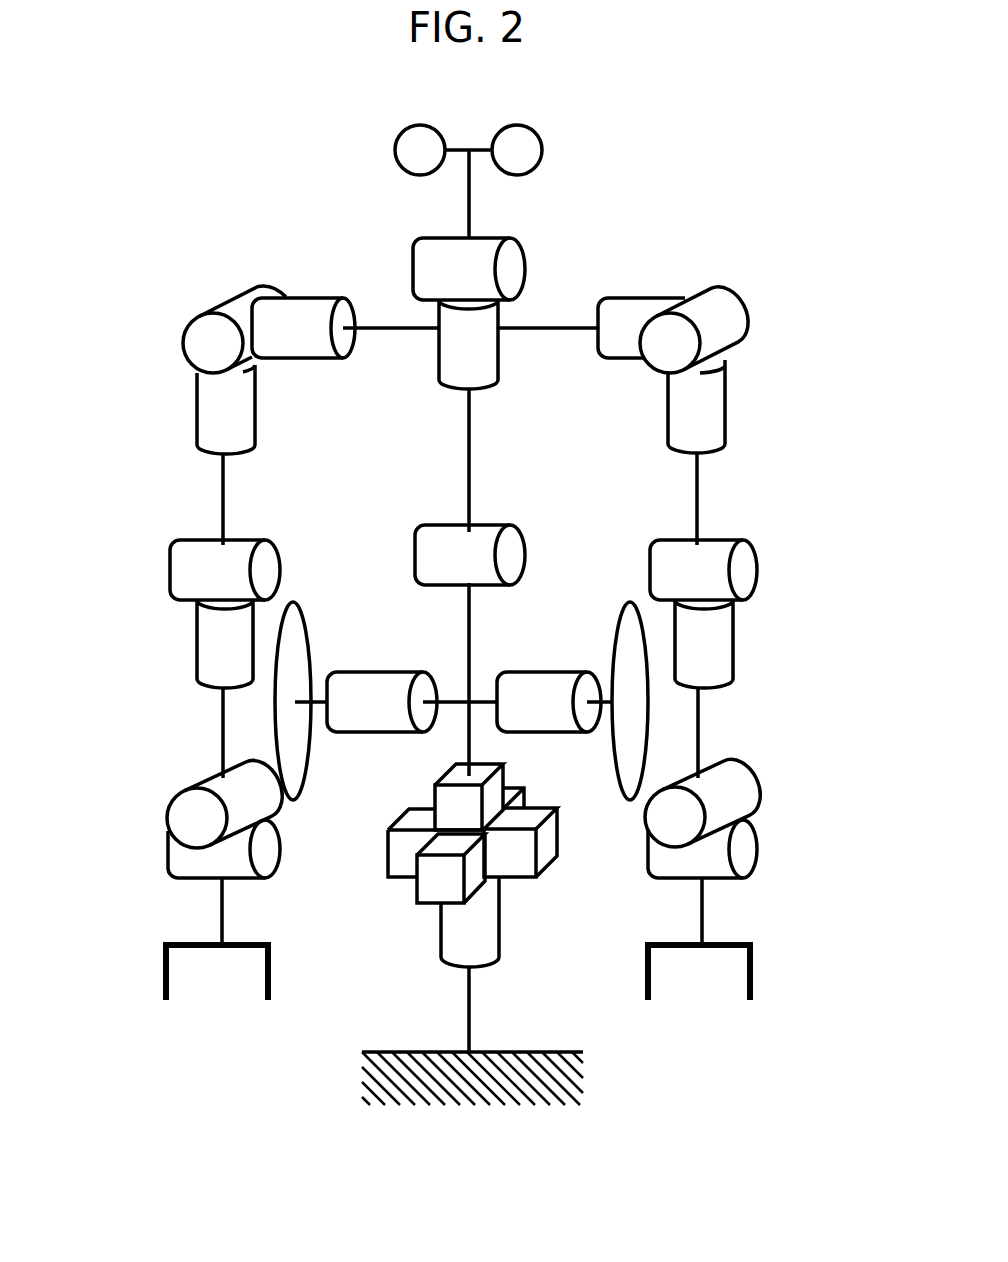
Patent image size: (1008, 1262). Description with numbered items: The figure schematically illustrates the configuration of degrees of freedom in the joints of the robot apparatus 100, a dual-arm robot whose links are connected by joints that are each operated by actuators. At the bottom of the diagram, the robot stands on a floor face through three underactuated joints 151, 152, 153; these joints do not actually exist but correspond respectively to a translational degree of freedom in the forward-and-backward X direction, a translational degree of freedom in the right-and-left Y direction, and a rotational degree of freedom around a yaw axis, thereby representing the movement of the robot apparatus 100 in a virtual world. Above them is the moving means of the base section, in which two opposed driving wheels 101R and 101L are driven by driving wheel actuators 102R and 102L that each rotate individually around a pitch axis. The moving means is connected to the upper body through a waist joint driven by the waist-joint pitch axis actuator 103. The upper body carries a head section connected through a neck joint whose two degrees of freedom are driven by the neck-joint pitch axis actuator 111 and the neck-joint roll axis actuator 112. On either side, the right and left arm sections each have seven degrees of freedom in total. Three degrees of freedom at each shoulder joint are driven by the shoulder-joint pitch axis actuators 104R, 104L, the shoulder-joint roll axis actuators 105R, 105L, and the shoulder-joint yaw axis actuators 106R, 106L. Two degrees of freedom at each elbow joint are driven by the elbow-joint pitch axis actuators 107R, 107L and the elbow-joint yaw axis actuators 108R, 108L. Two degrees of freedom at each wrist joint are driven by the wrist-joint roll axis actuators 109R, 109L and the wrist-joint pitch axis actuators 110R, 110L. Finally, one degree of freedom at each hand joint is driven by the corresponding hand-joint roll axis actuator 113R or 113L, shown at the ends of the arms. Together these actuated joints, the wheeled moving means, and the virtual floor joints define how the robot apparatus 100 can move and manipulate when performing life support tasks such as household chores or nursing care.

The robot apparatus 100 is at (600, 115).
The driving wheel 101R is at (297, 633).
The driving wheel 101L is at (623, 625).
The driving wheel actuator 102R is at (367, 682).
The driving wheel actuator 102L is at (538, 682).
The waist-joint pitch axis actuator 103 is at (492, 532).
The shoulder-joint pitch axis actuator 104R is at (297, 305).
The shoulder-joint pitch axis actuator 104L is at (620, 302).
The shoulder-joint roll axis actuator 105R is at (233, 305).
The shoulder-joint roll axis actuator 105L is at (735, 307).
The shoulder-joint yaw axis actuator 106R is at (202, 398).
The shoulder-joint yaw axis actuator 106L is at (718, 407).
The elbow-joint pitch axis actuator 107R is at (180, 572).
The elbow-joint pitch axis actuator 107L is at (748, 563).
The elbow-joint yaw axis actuator 108R is at (203, 642).
The elbow-joint yaw axis actuator 108L is at (727, 648).
The wrist-joint roll axis actuator 109R is at (190, 792).
The wrist-joint roll axis actuator 109L is at (747, 790).
The wrist-joint pitch axis actuator 110R is at (180, 858).
The wrist-joint pitch axis actuator 110L is at (748, 845).
The neck-joint pitch axis actuator 111 is at (500, 245).
The neck-joint roll axis actuator 112 is at (487, 368).
The hand-joint roll axis actuator 113R is at (177, 970).
The hand-joint roll axis actuator 113L is at (733, 977).
The underactuated joint 151 is at (430, 887).
The underactuated joint 152 is at (555, 845).
The underactuated joint 153 is at (493, 930).